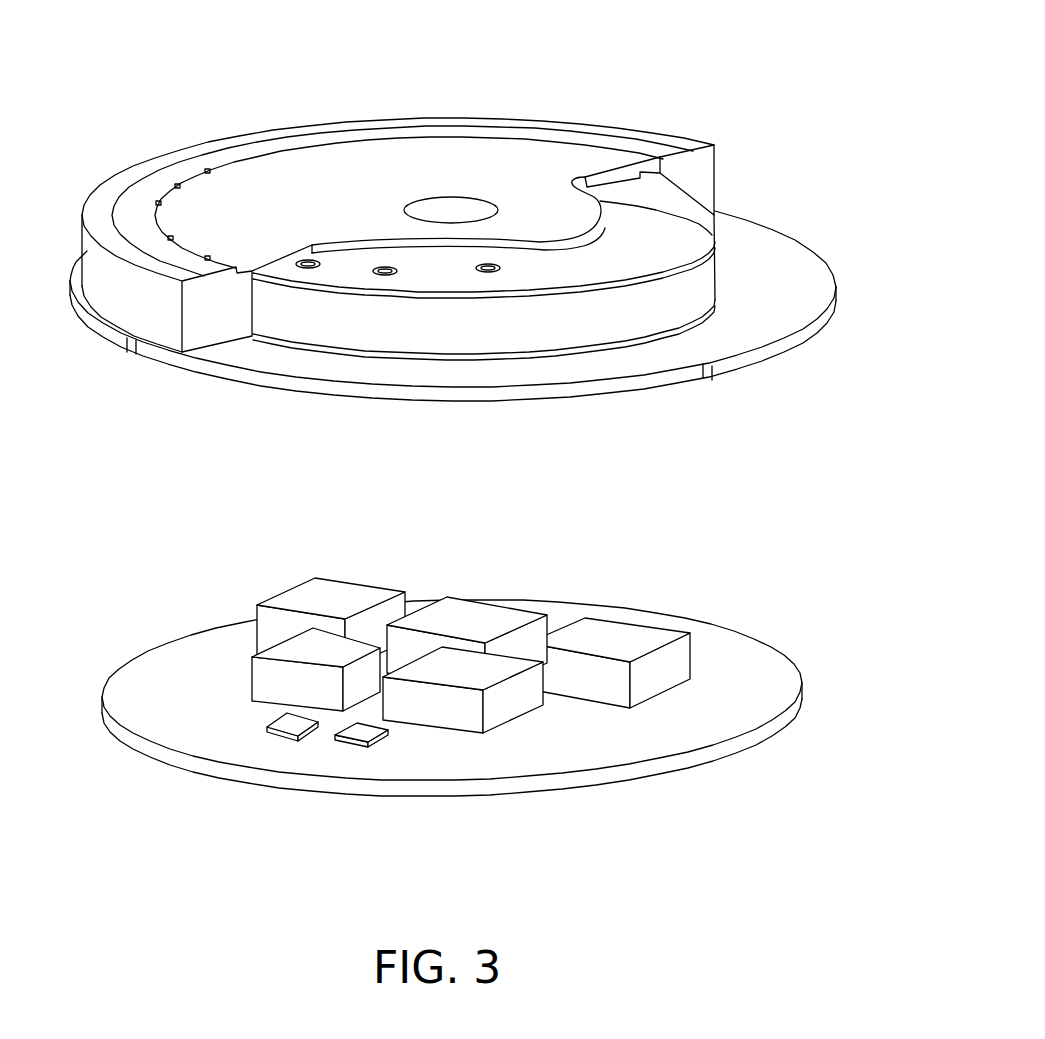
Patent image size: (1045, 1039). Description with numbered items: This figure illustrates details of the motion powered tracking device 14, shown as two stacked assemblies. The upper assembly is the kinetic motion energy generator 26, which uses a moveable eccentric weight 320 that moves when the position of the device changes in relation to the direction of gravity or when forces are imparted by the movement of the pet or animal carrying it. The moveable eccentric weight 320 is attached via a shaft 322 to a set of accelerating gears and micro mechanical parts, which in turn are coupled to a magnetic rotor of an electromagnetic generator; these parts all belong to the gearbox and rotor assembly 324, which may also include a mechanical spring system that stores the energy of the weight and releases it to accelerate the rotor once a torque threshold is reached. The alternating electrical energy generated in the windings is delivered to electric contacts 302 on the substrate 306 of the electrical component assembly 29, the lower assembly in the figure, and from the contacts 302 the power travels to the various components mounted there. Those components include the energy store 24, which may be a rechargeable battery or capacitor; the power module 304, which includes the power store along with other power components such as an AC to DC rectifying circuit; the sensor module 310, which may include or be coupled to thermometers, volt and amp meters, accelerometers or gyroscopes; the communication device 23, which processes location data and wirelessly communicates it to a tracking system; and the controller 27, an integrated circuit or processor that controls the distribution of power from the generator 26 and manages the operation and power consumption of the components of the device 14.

The motion powered tracking device 14 is at (835, 54).
The kinetic motion energy generator 26 is at (810, 178).
The moveable eccentric weight 320 is at (718, 165).
The shaft 322 is at (460, 210).
The gearbox and rotor assembly 324 is at (705, 268).
The electrical component assembly 29 is at (183, 817).
The substrate 306 is at (102, 700).
The energy store 24 is at (298, 578).
The sensor module 310 is at (488, 610).
The communication device 23 is at (630, 628).
The power module 304 is at (241, 687).
The controller 27 is at (515, 733).
The electric contacts 302 is at (358, 732).